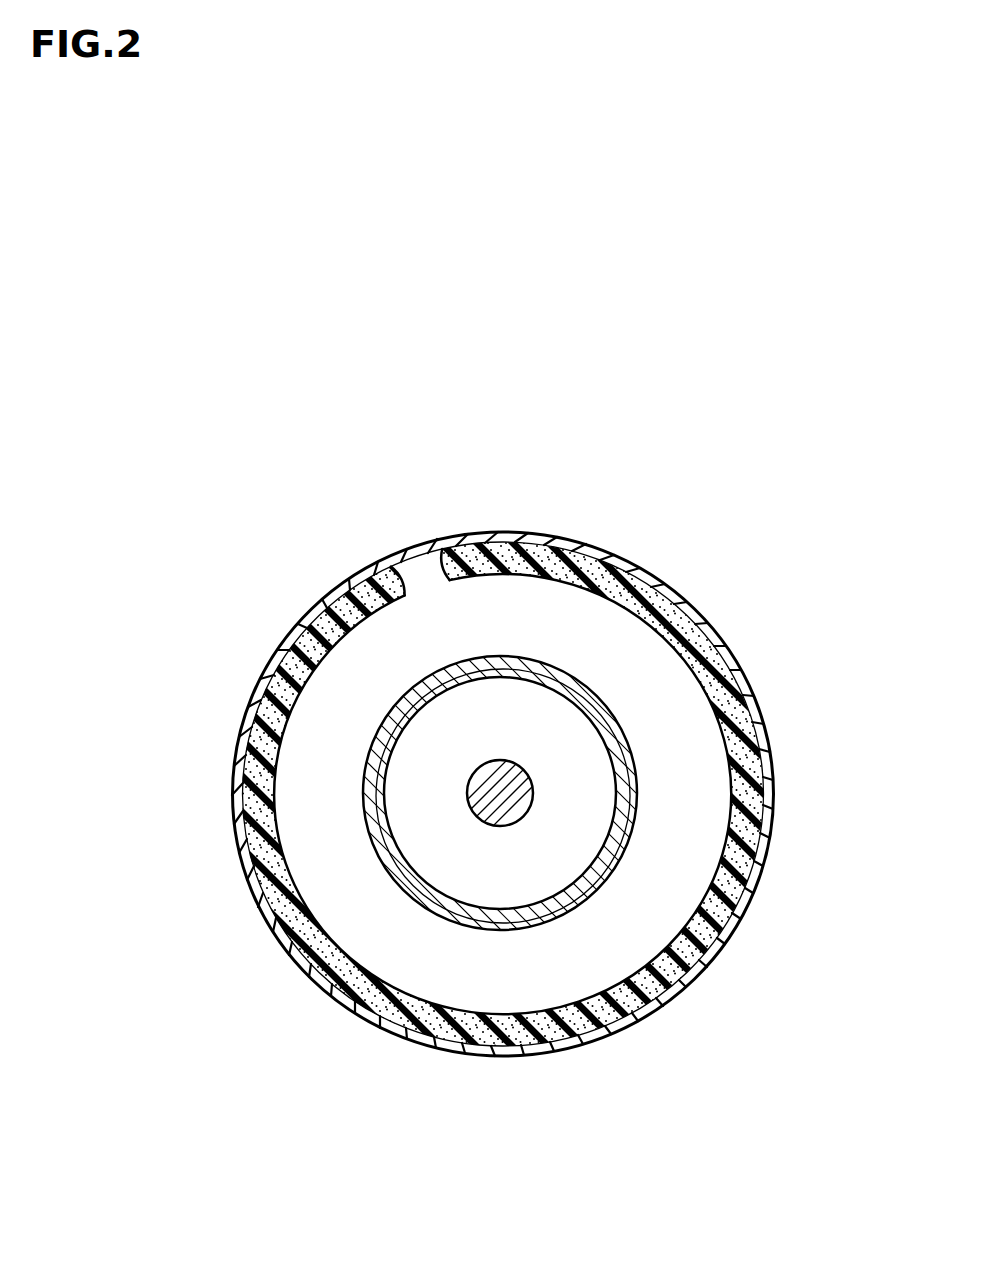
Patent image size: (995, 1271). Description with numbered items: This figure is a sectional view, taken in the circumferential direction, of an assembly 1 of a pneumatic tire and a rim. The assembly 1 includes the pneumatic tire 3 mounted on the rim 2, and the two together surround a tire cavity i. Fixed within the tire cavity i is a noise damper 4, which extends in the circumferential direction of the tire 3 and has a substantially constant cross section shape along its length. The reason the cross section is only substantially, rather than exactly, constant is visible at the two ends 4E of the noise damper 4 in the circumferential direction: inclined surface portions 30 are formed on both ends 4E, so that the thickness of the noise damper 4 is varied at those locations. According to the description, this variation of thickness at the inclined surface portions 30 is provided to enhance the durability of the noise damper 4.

The assembly 1 is at (627, 437).
The rim 2 is at (645, 772).
The pneumatic tire 3 is at (649, 572).
The noise damper 4 is at (690, 610).
The ends 4E is at (416, 589).
The inclined surface portions 30 is at (455, 585).
The tire cavity i is at (535, 982).